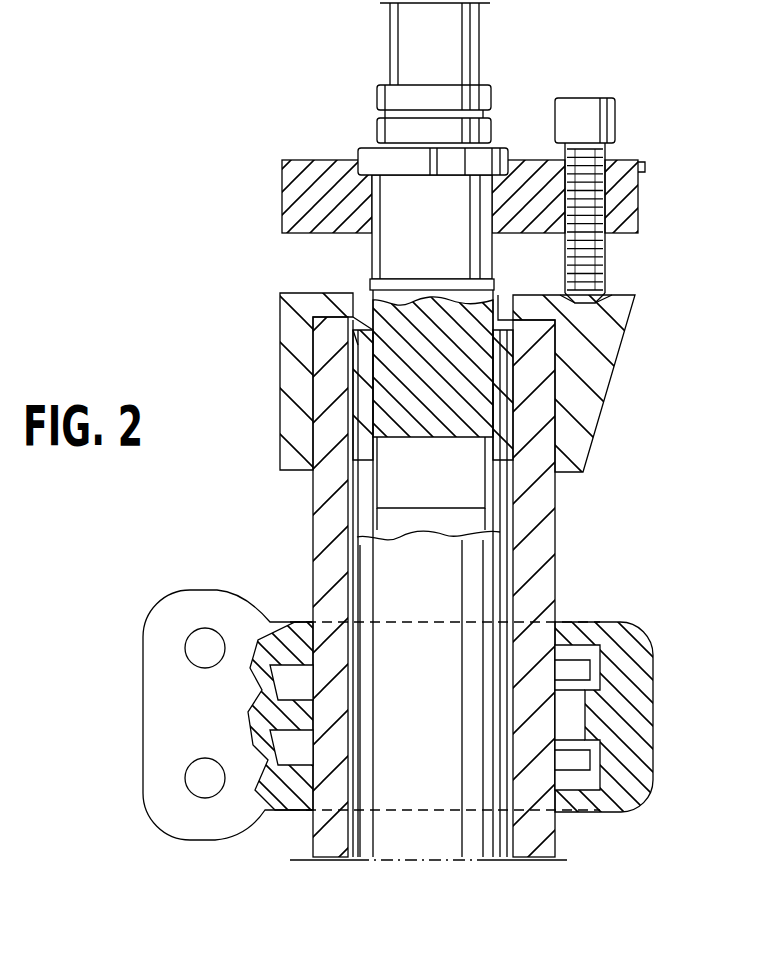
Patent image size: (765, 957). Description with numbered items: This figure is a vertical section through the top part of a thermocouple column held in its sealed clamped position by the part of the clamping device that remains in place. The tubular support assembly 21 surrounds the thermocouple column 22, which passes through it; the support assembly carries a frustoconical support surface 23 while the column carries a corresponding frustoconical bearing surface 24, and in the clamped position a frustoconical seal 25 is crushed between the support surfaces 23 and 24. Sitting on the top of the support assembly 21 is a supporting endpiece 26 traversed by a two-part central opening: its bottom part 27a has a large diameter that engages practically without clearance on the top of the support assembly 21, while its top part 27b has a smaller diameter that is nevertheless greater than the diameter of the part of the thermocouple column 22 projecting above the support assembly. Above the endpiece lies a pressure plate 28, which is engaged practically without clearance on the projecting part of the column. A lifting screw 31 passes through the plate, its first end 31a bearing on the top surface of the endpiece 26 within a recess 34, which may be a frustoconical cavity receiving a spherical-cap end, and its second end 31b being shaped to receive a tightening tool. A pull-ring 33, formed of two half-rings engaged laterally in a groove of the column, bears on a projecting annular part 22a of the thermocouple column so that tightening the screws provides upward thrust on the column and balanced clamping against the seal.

The tubular support assembly 21 is at (572, 533).
The thermocouple column 22 is at (411, 848).
The projecting annular part 22a is at (397, 130).
The frustoconical support surface 23 is at (503, 336).
The frustoconical bearing surface 24 is at (335, 290).
The frustoconical seal 25 is at (360, 343).
The supporting endpiece 26 is at (593, 362).
The bottom part of the central opening 27a is at (345, 437).
The top part of the central opening 27b is at (340, 297).
The pressure plate 28 is at (632, 162).
The lifting screw 31 is at (638, 204).
The first end of the lifting screw 31a is at (605, 272).
The second end of the lifting screw 31b is at (597, 105).
The pull-ring 33 is at (375, 162).
The recesses 34 is at (597, 300).